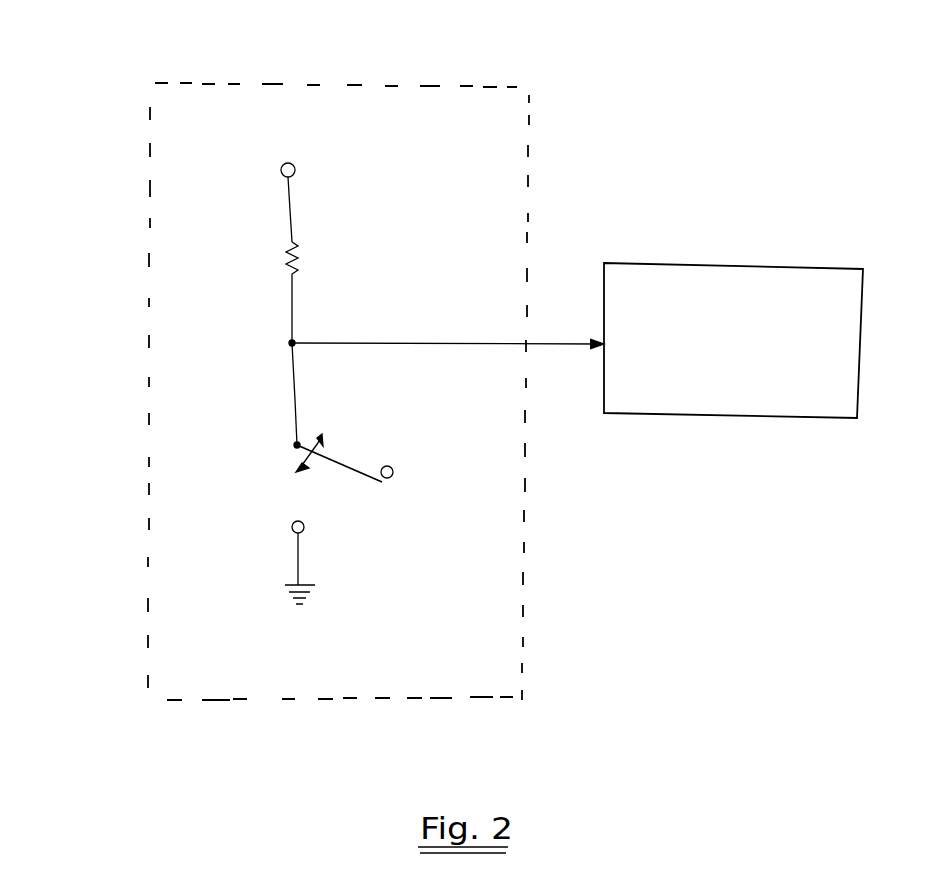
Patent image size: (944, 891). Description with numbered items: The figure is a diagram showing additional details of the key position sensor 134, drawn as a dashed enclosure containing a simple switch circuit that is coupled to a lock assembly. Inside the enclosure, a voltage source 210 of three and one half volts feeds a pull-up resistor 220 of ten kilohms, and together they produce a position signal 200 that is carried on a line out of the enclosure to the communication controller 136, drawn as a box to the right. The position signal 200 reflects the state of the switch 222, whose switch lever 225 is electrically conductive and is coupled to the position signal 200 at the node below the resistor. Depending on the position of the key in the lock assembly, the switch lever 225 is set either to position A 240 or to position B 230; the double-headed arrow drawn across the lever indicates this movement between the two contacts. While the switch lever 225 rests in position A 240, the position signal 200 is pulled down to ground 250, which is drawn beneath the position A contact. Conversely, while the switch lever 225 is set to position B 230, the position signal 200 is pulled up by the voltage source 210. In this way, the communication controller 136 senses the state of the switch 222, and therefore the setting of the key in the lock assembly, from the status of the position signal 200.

The key position sensor 134 is at (447, 78).
The communication controller 136 is at (695, 263).
The position signal 200 is at (452, 346).
The voltage source 210 is at (281, 173).
The pull-up resistor 220 is at (272, 250).
The switch 222 is at (250, 480).
The switch lever 225 is at (342, 463).
The position B 230 is at (394, 468).
The position A 240 is at (290, 532).
The ground 250 is at (278, 604).